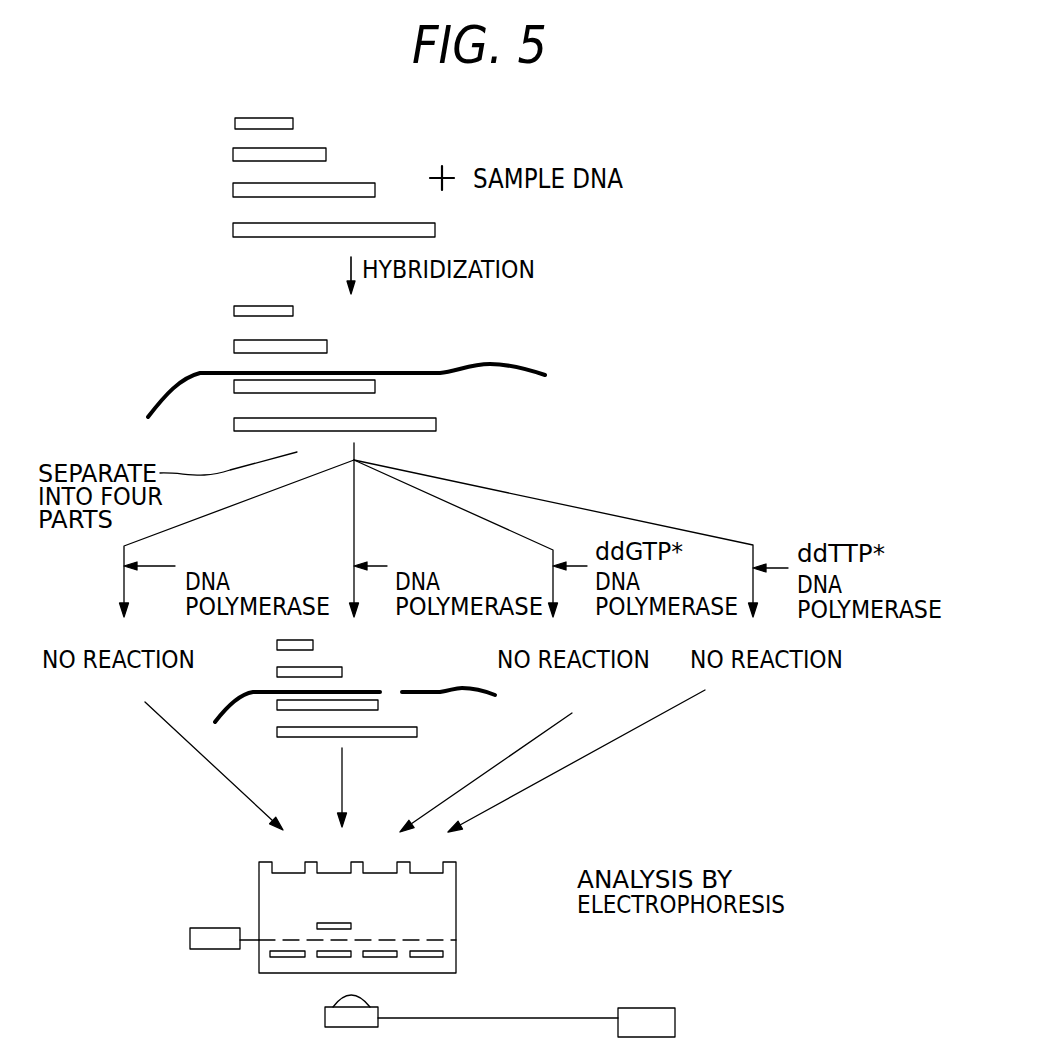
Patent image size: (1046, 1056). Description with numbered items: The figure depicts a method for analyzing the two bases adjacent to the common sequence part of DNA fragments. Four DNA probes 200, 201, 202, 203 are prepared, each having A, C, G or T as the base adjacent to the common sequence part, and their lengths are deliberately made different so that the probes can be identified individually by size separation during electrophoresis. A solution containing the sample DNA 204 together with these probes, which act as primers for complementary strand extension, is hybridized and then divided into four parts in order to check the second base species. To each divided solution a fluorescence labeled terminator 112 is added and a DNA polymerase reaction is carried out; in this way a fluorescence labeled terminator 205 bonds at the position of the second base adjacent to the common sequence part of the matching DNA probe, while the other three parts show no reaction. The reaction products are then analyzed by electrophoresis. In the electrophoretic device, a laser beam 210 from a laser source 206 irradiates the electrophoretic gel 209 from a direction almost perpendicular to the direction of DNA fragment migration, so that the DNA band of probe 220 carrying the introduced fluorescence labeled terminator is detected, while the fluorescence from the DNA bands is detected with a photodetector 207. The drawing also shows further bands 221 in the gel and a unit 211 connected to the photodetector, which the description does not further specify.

The DNA probe 200 is at (237, 123).
The DNA probe 201 is at (236, 157).
The DNA probe 202 is at (236, 193).
The DNA probe 203 is at (236, 230).
The sample DNA 204 is at (485, 373).
The fluorescence labeled terminator 205 is at (403, 713).
The fluorescence labeled terminator 112 is at (270, 546).
The laser source 206 is at (208, 935).
The photodetector 207 is at (325, 1015).
The electrophoretic gel 209 is at (450, 882).
The laser beam 210 is at (456, 940).
The data processing unit 211 is at (658, 1013).
The DNA band of probe 220 is at (351, 926).
The unextended probe bands 221 is at (380, 957).